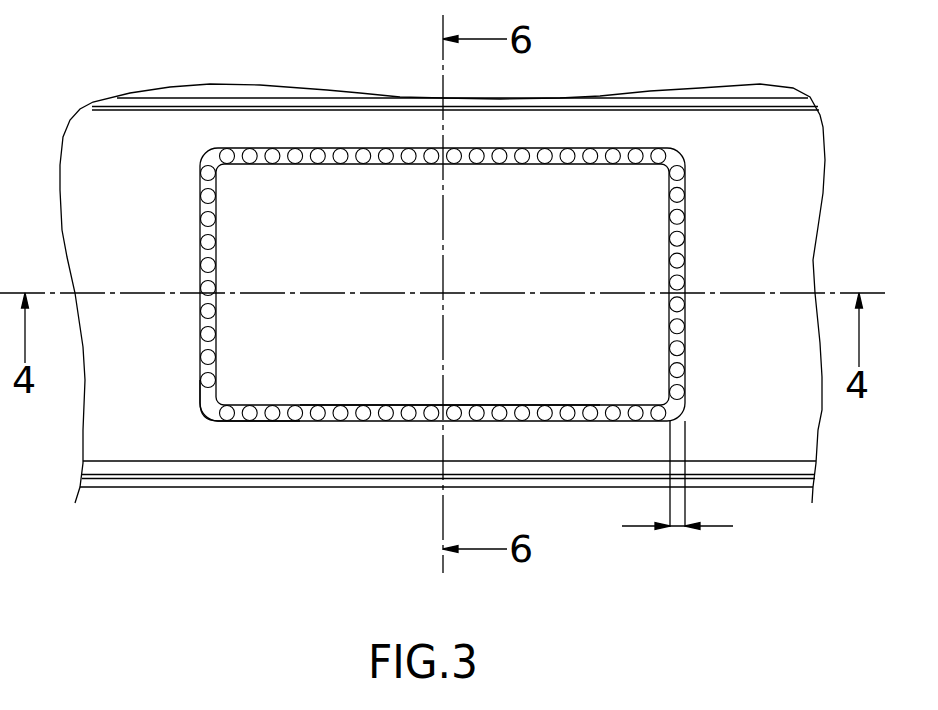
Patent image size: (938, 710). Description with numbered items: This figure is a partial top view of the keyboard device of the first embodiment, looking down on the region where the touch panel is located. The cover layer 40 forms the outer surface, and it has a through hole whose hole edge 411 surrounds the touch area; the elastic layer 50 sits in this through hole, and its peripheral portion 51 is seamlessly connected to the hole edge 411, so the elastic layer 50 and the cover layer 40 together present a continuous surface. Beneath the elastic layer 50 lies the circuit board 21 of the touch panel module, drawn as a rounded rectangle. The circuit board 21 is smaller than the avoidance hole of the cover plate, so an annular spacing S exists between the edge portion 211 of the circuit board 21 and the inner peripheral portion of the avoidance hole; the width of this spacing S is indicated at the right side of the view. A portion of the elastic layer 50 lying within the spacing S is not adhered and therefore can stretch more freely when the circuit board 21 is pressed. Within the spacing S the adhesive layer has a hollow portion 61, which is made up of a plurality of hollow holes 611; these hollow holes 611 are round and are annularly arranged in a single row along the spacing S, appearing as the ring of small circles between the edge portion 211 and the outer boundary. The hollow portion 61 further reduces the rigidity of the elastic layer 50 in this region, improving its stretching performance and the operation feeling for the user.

The circuit board 21 is at (340, 383).
The edge portion 211 is at (410, 417).
The cover layer 40 is at (585, 447).
The hole edge 411 is at (685, 360).
The elastic layer 50 is at (683, 150).
The peripheral portion 51 is at (670, 227).
The hollow portion 61 is at (229, 493).
The hollow holes 611 is at (200, 400).
The spacing S is at (677, 540).